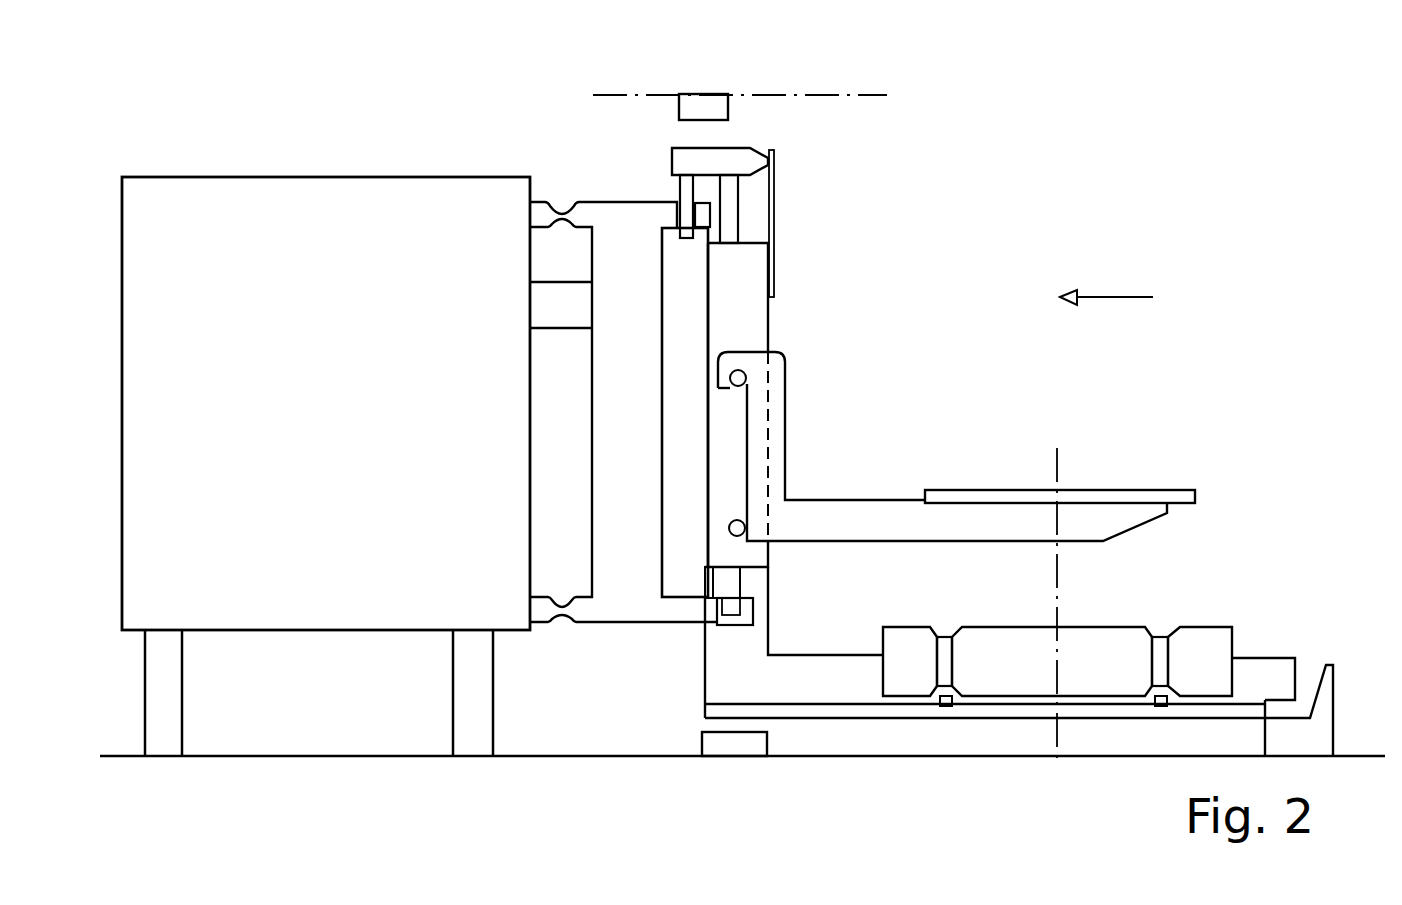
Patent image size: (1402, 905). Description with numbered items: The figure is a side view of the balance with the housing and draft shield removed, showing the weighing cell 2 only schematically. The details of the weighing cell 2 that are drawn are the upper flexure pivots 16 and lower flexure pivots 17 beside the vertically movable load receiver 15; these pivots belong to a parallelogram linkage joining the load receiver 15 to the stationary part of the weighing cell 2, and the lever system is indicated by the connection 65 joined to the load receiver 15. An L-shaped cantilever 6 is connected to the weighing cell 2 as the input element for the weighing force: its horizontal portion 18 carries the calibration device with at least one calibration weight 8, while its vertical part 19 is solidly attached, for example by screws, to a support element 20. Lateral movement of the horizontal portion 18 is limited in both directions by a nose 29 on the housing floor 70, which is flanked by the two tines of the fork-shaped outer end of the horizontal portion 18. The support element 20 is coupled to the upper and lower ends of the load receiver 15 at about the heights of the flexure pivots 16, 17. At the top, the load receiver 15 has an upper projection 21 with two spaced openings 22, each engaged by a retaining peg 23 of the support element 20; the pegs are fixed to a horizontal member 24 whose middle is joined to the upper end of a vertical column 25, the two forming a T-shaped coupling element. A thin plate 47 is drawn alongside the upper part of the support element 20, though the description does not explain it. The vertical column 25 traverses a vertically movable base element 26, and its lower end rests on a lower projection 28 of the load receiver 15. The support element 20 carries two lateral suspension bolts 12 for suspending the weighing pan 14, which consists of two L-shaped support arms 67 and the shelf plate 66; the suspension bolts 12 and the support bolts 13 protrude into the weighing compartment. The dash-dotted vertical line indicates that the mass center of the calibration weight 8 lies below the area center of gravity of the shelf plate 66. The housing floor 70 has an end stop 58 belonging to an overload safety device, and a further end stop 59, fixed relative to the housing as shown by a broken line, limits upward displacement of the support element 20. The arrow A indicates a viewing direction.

The weighing cell 2 is at (303, 403).
The L-shaped cantilever 6 is at (782, 630).
The calibration weight 8 is at (998, 673).
The suspension bolt 12 is at (747, 378).
The support bolt 13 is at (729, 528).
The weighing pan 14 is at (1151, 486).
The load receiver 15 is at (611, 403).
The upper flexure pivot 16 is at (560, 207).
The lower flexure pivot 17 is at (557, 627).
The horizontal portion 18 is at (840, 685).
The vertical part 19 is at (728, 640).
The support element 20 is at (780, 300).
The upper projection 21 is at (710, 210).
The opening 22 is at (676, 212).
The retaining peg 23 is at (681, 189).
The horizontal member 24 is at (757, 150).
The vertical column 25 is at (732, 227).
The base element 26 is at (762, 330).
The lower projection 28 is at (683, 610).
The nose 29 is at (1318, 718).
The guide plate 47 is at (775, 180).
The end stop 58 is at (733, 740).
The end stop 59 is at (704, 103).
The connection 65 is at (545, 305).
The shelf plate 66 is at (965, 490).
The L-shaped support arm 67 is at (770, 433).
The housing floor 70 is at (1070, 757).
The viewing direction A is at (1118, 298).